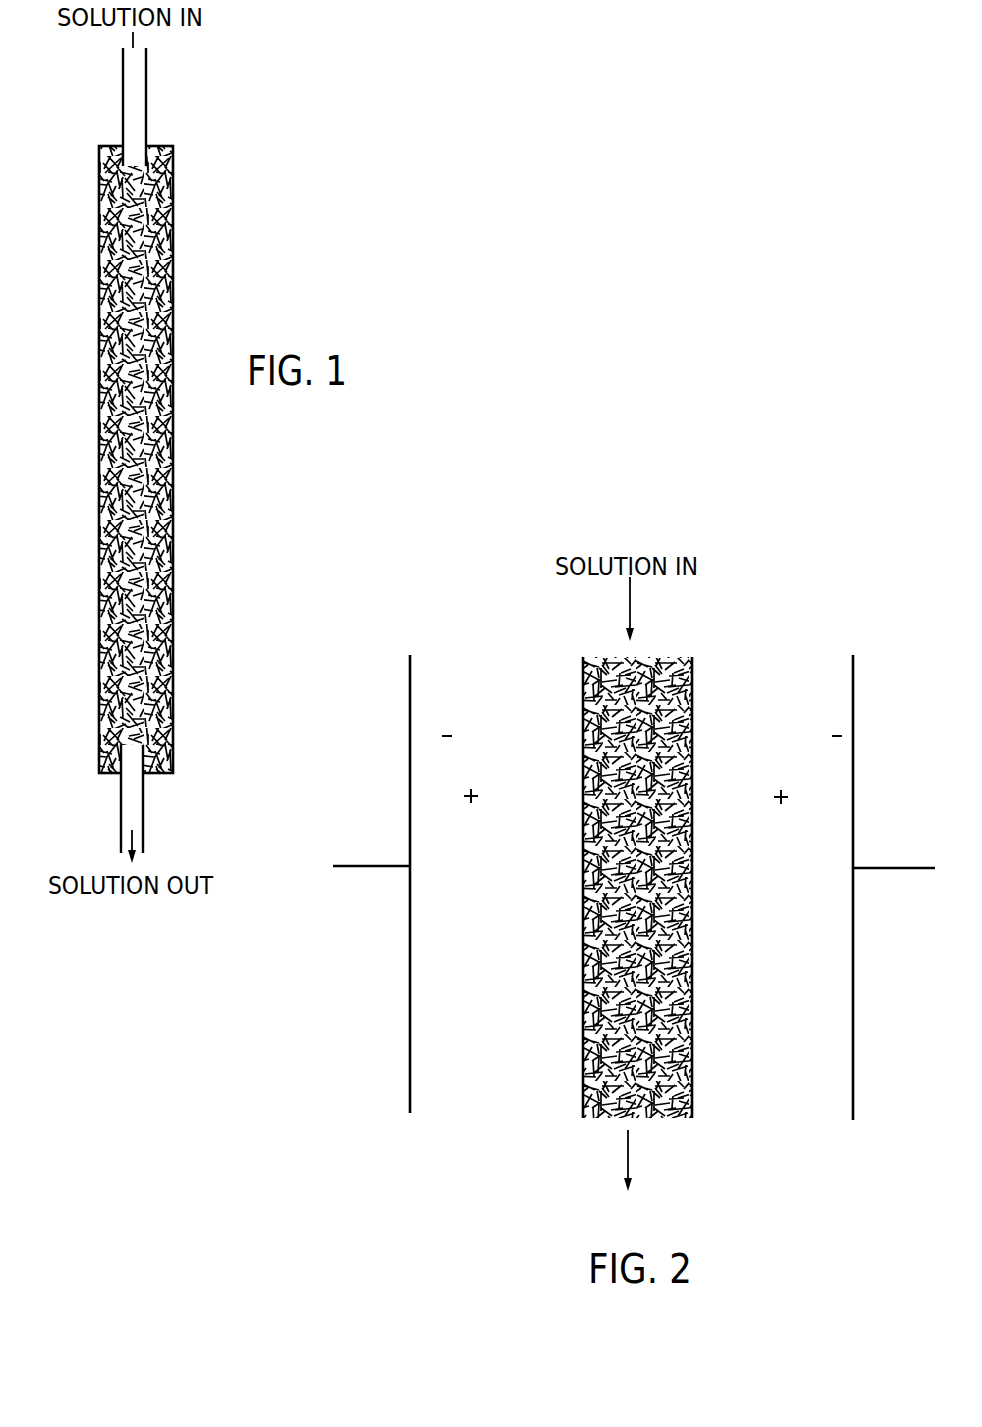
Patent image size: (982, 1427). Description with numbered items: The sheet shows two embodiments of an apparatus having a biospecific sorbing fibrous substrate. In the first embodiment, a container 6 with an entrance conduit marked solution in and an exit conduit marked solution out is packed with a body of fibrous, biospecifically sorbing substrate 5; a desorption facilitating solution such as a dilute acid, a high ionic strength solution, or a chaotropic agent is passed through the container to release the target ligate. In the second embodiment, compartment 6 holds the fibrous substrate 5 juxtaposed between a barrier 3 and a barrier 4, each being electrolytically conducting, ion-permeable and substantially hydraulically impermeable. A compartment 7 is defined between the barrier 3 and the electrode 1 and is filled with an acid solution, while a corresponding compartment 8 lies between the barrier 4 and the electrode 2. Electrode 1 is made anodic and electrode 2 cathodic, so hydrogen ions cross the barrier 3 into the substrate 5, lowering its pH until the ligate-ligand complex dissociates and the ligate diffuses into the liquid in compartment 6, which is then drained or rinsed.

In FIG. 2, the electrode 1 is at (408, 1083).
In FIG. 2, the electrode 2 is at (854, 1078).
In FIG. 2, the barrier 3 is at (582, 1085).
In FIG. 2, the barrier 4 is at (692, 1085).
In FIG. 1, the biospecific fibrous substrate 5 is at (140, 279).
In FIG. 2, the biospecific fibrous substrate 5 is at (650, 657).
In FIG. 1, the container 6 is at (173, 157).
In FIG. 2, the container 6 is at (574, 830).
In FIG. 2, the compartment 7 is at (456, 803).
In FIG. 2, the cathode compartment 8 is at (800, 803).